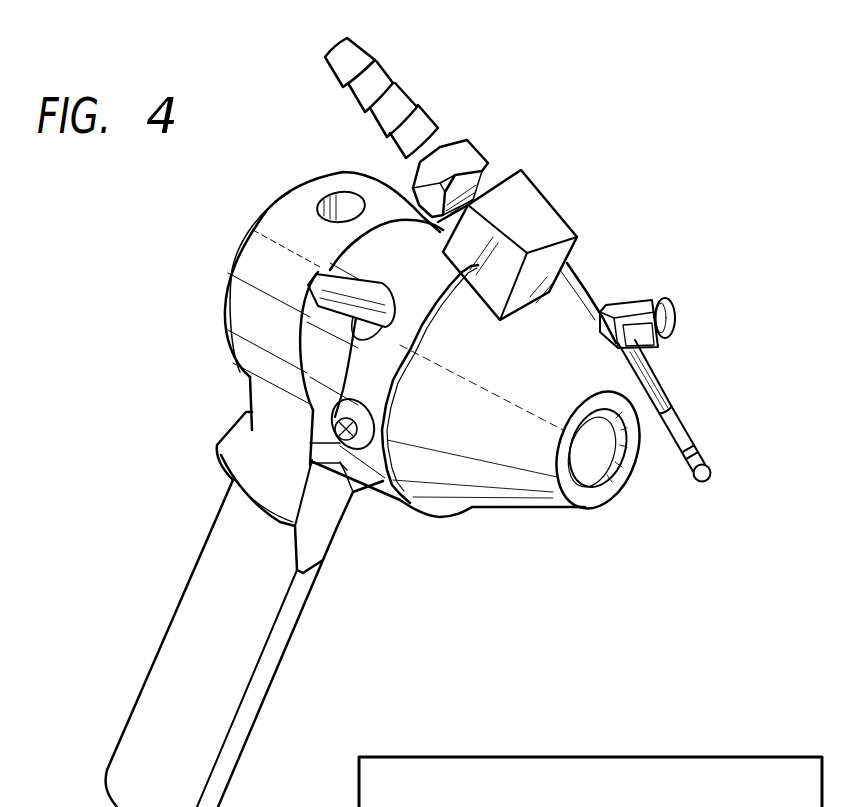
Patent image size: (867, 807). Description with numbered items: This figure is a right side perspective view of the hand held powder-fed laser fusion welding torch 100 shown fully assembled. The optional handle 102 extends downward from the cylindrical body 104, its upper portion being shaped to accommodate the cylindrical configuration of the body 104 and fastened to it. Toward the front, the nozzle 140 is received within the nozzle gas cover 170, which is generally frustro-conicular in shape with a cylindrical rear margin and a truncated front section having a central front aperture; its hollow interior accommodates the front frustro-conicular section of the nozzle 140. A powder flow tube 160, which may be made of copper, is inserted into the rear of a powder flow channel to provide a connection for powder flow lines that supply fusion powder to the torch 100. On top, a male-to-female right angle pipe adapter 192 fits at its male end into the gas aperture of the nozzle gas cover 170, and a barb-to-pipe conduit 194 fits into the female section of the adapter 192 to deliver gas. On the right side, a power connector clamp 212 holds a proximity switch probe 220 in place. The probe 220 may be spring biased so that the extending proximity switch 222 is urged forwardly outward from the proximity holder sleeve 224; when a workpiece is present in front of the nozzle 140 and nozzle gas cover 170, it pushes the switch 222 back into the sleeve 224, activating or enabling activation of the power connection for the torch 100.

The hand held powder-fed laser fusion welding torch 100 is at (613, 223).
The handle 102 is at (270, 687).
The body 104 is at (287, 220).
The nozzle 140 is at (310, 356).
The powder flow tube 160 is at (312, 278).
The nozzle gas cover 170 is at (512, 510).
The male-to-female right angle pipe adapter 192 is at (547, 193).
The barb-to-pipe conduit 194 is at (405, 93).
The power connector clamp 212 is at (633, 302).
The proximity switch probe 220 is at (713, 414).
The proximity switch 222 is at (700, 454).
The proximity holder sleeve 224 is at (657, 382).